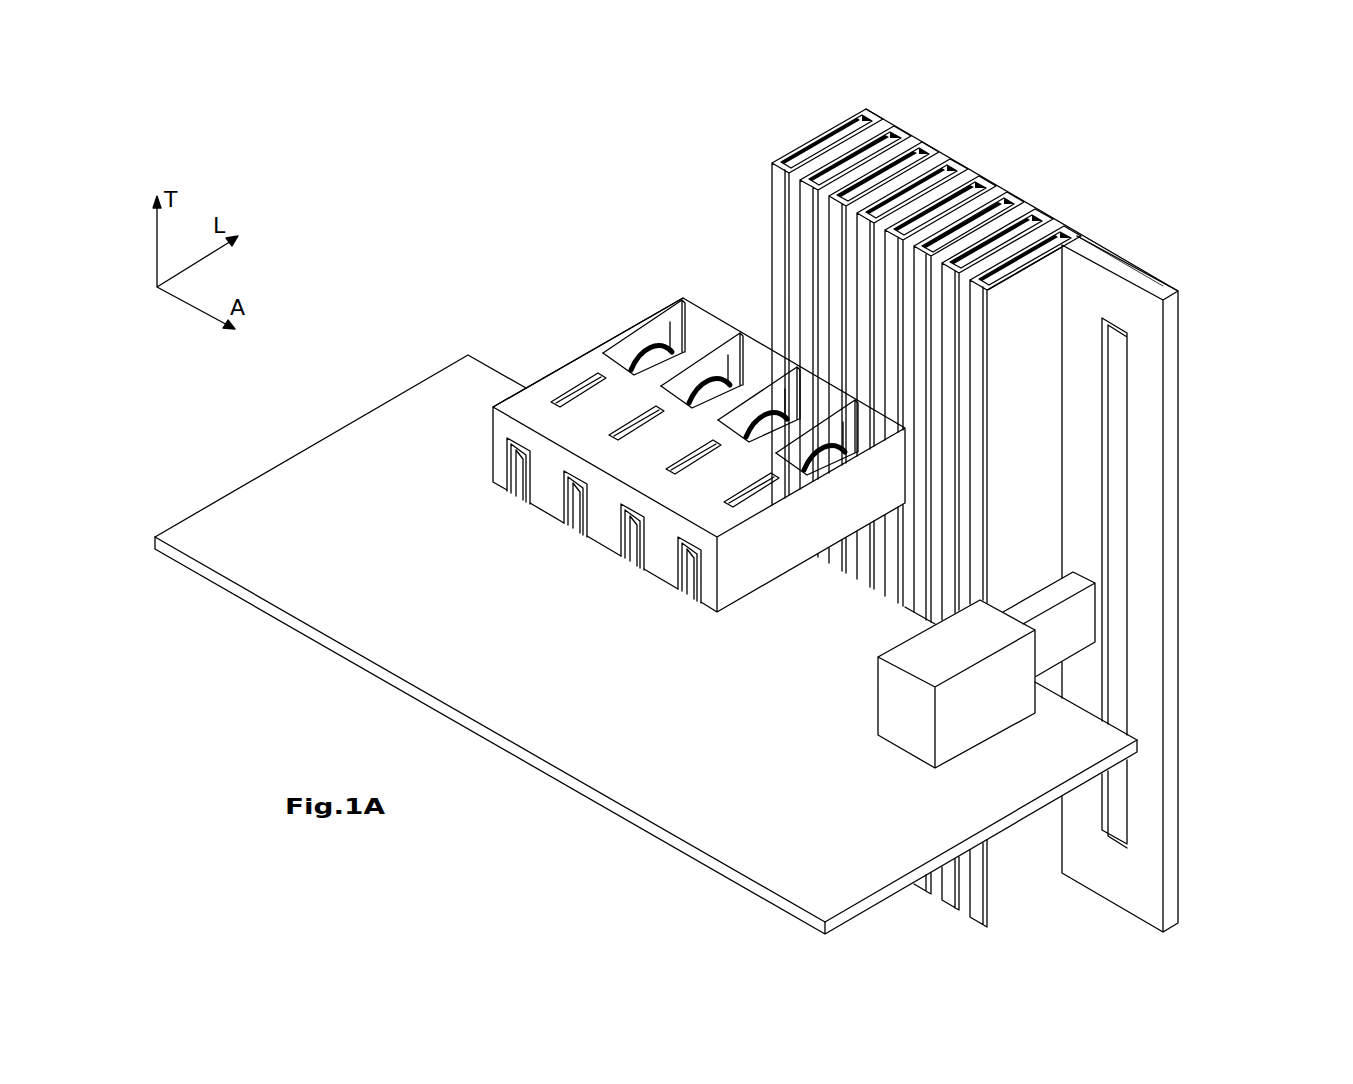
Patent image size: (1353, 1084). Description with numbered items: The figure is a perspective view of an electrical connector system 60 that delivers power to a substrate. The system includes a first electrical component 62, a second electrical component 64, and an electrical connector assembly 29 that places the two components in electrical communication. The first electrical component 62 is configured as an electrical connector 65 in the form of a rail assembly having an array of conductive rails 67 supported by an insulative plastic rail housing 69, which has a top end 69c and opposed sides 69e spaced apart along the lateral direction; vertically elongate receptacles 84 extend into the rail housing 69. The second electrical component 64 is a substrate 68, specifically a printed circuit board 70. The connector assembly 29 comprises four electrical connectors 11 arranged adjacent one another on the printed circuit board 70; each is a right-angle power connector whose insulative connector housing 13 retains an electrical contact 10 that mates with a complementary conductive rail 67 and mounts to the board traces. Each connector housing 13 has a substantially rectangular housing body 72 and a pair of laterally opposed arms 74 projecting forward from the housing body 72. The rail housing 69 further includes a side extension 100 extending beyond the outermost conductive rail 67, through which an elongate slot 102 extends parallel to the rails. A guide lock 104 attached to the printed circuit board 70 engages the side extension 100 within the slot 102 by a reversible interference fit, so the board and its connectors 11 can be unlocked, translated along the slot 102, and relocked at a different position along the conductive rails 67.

The electrical contact 10 is at (510, 472).
The electrical connector 11 is at (592, 348).
The connector housing 13 is at (638, 480).
The electrical connector assembly 29 is at (707, 453).
The electrical connector system 60 is at (707, 453).
The first electrical component 62 is at (975, 488).
The second electrical component 64 is at (646, 644).
The electrical connector 65 is at (1067, 208).
The conductive rail 67 is at (837, 145).
The substrate 68 is at (252, 600).
The rail housing 69 is at (1139, 570).
The top end 69c is at (1133, 262).
The side 69e is at (1035, 378).
The printed circuit board 70 is at (462, 678).
The housing body 72 is at (541, 392).
The arm 74 is at (712, 345).
The receptacle 84 is at (887, 150).
The side extension 100 is at (1180, 500).
The slot 102 is at (1118, 512).
The guide lock 104 is at (1003, 680).